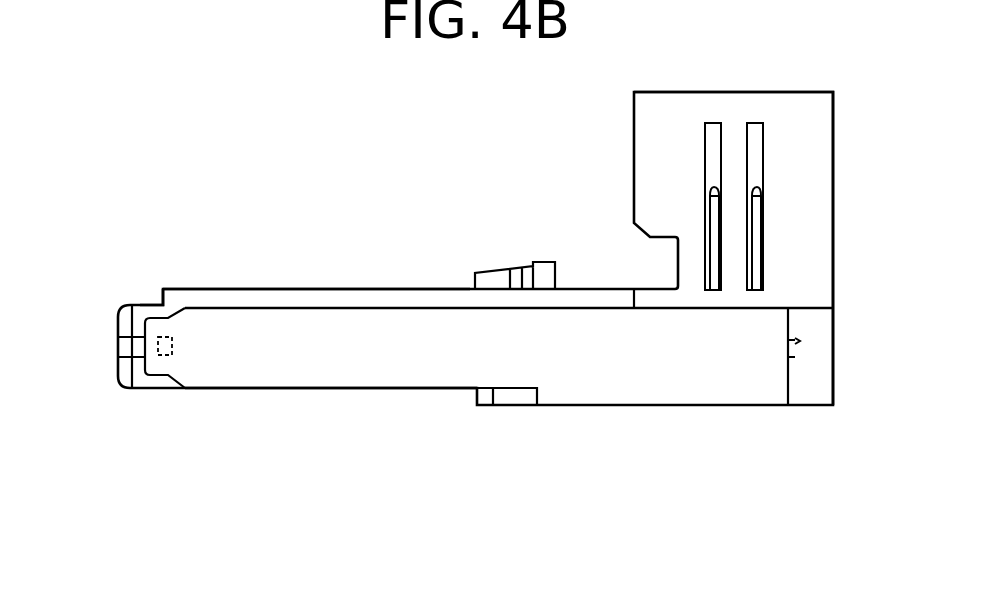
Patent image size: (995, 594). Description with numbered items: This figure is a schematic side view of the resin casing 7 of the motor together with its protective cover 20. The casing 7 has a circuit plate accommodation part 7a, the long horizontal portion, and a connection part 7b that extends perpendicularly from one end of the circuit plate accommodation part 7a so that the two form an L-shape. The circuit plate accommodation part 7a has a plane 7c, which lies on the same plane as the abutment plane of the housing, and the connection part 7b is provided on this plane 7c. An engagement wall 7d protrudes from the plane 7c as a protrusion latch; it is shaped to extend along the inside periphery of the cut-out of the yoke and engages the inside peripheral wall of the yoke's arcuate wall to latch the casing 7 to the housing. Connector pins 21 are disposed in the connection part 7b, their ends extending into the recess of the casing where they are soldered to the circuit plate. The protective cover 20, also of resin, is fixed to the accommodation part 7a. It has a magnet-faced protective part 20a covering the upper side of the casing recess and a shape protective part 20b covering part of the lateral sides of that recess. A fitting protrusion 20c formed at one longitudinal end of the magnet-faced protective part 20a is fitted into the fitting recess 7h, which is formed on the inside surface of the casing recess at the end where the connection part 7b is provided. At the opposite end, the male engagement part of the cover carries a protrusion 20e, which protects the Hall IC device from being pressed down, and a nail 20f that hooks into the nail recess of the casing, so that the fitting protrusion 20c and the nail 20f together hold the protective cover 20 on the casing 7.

The casing 7 is at (573, 250).
The circuit plate accommodation part 7a is at (353, 295).
The connection part 7b is at (826, 161).
The plane 7c is at (258, 289).
The engagement wall 7d is at (545, 268).
The fitting recess 7h is at (798, 352).
The protective cover 20 is at (566, 450).
The magnet-faced protective part 20a is at (425, 373).
The shape protective part 20b is at (577, 408).
The fitting protrusion 20c is at (800, 341).
The protrusion 20e is at (172, 347).
The nail 20f is at (116, 348).
The connector pins 21 is at (677, 268).